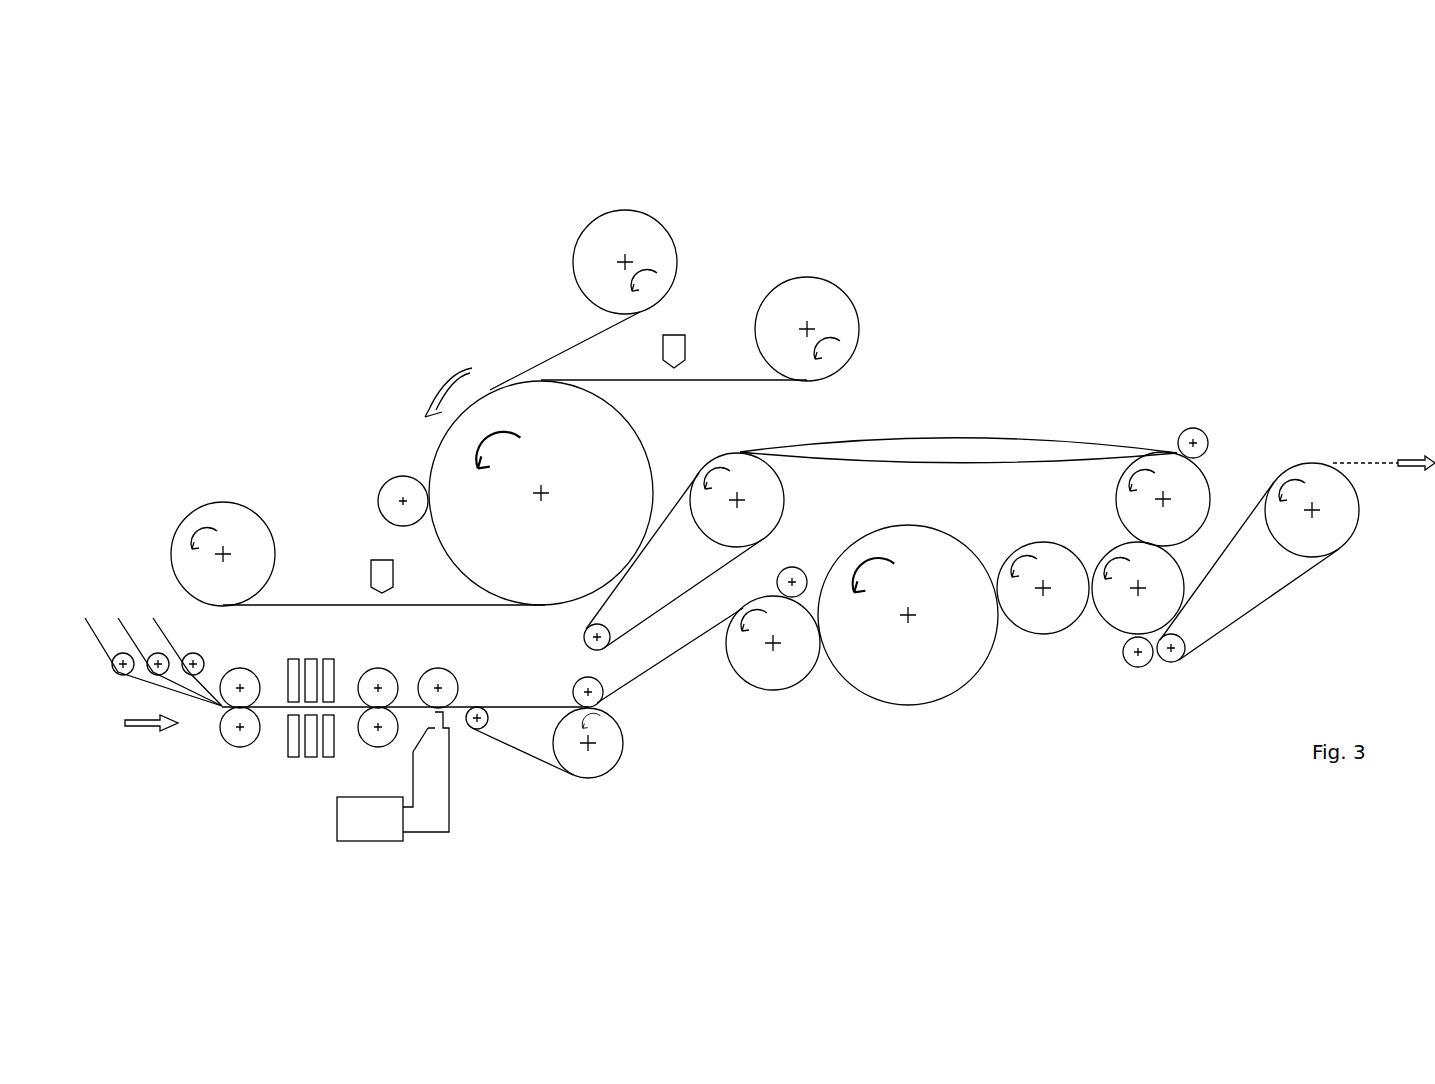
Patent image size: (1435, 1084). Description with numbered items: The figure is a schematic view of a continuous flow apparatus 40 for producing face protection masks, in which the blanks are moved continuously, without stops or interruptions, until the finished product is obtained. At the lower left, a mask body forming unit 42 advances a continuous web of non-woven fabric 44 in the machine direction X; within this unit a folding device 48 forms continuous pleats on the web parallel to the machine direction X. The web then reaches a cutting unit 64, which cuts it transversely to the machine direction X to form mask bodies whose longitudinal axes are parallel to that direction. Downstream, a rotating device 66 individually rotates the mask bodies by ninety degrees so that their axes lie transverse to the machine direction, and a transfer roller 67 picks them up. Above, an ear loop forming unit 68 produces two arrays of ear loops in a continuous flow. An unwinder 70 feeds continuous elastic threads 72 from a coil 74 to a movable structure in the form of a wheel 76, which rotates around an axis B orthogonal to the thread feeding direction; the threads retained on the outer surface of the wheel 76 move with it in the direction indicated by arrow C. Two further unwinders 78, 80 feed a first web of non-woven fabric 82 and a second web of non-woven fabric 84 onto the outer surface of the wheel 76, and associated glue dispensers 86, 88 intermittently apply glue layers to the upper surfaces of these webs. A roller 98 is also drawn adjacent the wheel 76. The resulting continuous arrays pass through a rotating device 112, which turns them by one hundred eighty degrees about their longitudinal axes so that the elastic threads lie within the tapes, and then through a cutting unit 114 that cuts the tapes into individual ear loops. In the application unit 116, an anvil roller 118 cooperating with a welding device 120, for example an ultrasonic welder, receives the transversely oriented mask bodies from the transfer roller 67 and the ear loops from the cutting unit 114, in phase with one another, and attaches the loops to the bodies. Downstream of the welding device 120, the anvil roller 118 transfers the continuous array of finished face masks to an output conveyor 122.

The continuous flow apparatus 40 is at (1038, 225).
The mask body forming unit 42 is at (753, 792).
The continuous web of non-woven fabric 44 is at (272, 700).
The folding device 48 is at (348, 663).
The cutting unit 64 is at (802, 555).
The rotating device 66 is at (963, 705).
The transfer roller 67 is at (1043, 613).
The ear loop forming unit 68 is at (445, 343).
The unwinder 70 is at (654, 210).
The continuous elastic thread 72 is at (563, 350).
The coil 74 is at (607, 238).
The wheel 76 is at (437, 445).
The unwinder 78 is at (833, 268).
The unwinder 80 is at (196, 490).
The first web of non-woven fabric 82 is at (733, 380).
The second web of non-woven fabric 84 is at (347, 604).
The glue dispenser 86 is at (672, 332).
The glue dispenser 88 is at (377, 559).
The roller 98 is at (397, 493).
The rotating device 112 is at (1032, 402).
The cutting unit 114 is at (1190, 412).
The application unit 116 is at (1192, 580).
The anvil roller 118 is at (1155, 607).
The welding device 120 is at (1140, 658).
The output conveyor 122 is at (1318, 447).
The axis B is at (543, 492).
The arrow C is at (437, 393).
The machine direction X is at (140, 727).